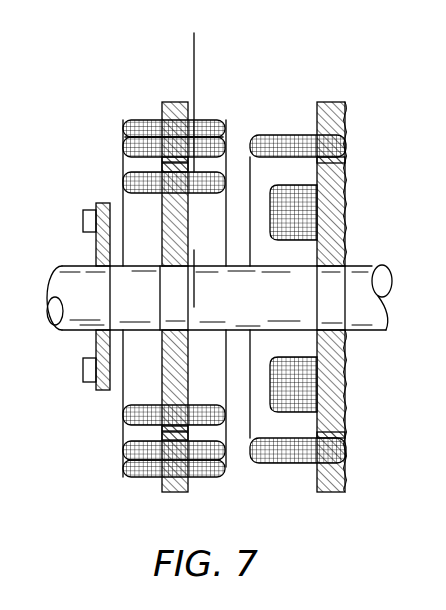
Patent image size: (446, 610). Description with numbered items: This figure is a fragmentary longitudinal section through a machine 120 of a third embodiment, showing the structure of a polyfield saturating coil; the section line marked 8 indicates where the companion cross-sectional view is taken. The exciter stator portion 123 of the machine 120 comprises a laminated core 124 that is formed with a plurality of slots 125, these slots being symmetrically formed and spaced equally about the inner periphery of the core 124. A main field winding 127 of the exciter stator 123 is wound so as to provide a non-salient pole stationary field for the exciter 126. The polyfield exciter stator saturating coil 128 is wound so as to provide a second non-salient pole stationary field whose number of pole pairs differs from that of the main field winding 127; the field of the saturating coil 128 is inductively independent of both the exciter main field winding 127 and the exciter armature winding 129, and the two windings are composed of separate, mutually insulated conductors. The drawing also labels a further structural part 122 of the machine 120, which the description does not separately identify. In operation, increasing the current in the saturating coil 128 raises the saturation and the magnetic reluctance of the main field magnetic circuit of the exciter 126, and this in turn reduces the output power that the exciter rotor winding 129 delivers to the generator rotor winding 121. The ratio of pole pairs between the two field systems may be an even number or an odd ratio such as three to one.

The section line 8- 8 is at (240, 293).
The machine 120 is at (289, 130).
The generator rotor winding 121 is at (270, 408).
The right flange plate 122 is at (312, 478).
The exciter stator portion 123 is at (156, 100).
The laminated core 124 is at (191, 170).
The slots 125 is at (127, 127).
The exciter 126 is at (155, 488).
The main field winding 127 is at (125, 144).
The polyfield exciter stator saturating coil 128 is at (128, 130).
The exciter armature winding 129 is at (125, 181).